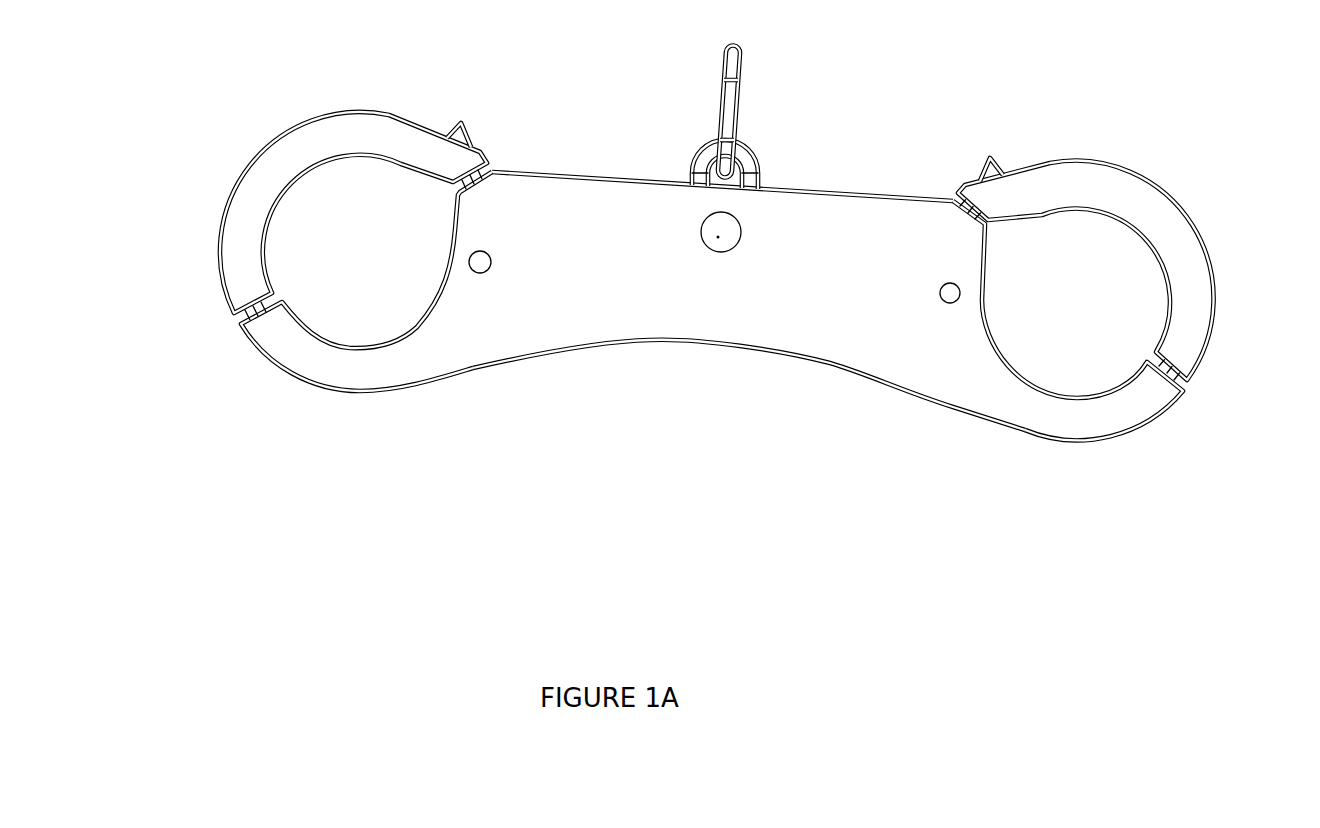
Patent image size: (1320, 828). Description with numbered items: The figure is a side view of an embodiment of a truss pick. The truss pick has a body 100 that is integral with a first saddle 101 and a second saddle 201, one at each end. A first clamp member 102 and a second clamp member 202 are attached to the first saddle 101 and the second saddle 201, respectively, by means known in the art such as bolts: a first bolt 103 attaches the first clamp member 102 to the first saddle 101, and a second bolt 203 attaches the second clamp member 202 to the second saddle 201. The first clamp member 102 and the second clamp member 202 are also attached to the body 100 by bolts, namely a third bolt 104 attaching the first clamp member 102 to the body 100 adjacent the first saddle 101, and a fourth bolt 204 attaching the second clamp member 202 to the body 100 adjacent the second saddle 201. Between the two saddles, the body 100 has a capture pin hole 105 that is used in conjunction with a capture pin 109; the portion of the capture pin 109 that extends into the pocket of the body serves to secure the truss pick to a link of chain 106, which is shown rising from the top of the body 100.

The body 100 is at (812, 328).
The first saddle 101 is at (322, 365).
The first clamp member 102 is at (270, 178).
The first bolt 103 is at (258, 308).
The third bolt 104 is at (490, 160).
The capture pin hole 105 is at (746, 213).
The link of chain 106 is at (745, 140).
The capture pin 109 is at (718, 237).
The second saddle 201 is at (1120, 410).
The second clamp member 202 is at (1137, 205).
The second bolt 203 is at (1183, 386).
The fourth bolt 204 is at (973, 200).